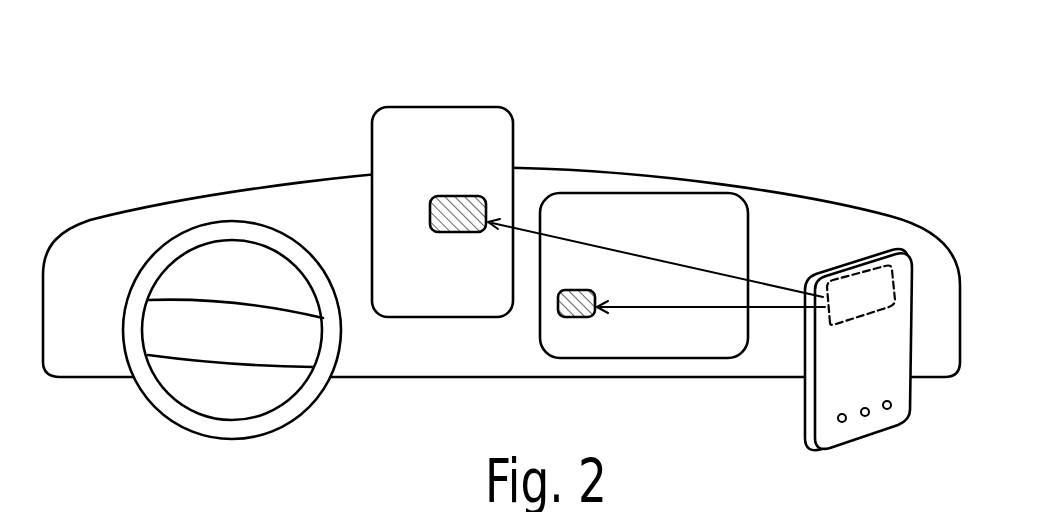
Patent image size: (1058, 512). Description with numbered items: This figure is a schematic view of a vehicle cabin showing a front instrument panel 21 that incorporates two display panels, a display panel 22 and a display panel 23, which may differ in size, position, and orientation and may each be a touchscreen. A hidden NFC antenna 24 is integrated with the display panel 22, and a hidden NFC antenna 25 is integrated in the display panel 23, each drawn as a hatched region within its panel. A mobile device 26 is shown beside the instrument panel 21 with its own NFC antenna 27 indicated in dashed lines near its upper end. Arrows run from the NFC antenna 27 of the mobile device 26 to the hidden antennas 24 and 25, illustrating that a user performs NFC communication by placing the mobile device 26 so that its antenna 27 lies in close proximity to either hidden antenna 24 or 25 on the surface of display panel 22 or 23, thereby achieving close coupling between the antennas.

The front instrument panel 21 is at (322, 205).
The display panel 22 is at (477, 107).
The display panel 23 is at (698, 197).
The hidden NFC antenna 24 is at (445, 232).
The hidden NFC antenna 25 is at (561, 310).
The mobile device 26 is at (905, 383).
The NFC antenna 27 is at (895, 287).